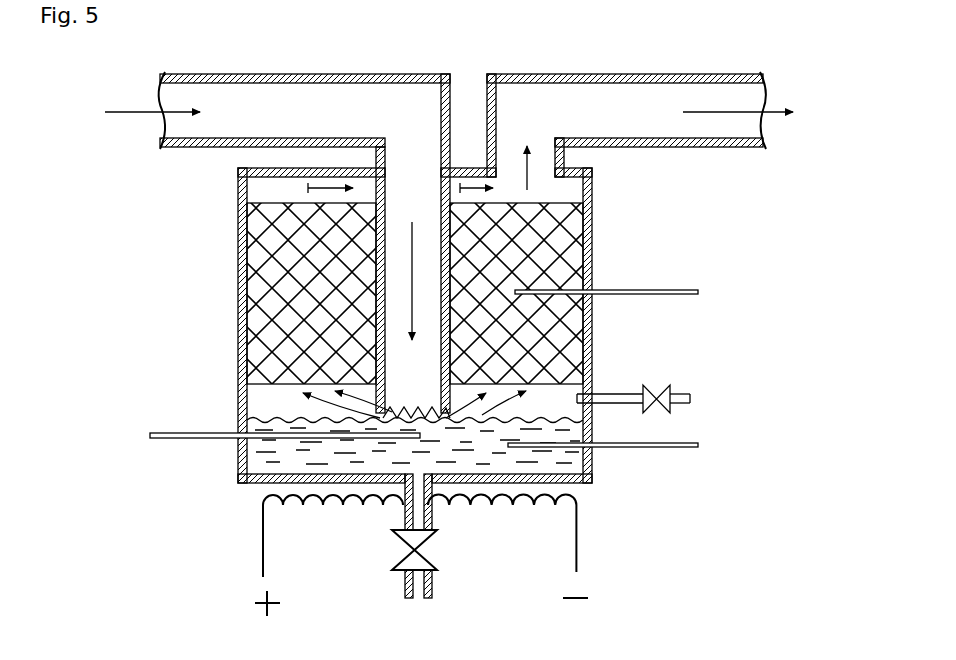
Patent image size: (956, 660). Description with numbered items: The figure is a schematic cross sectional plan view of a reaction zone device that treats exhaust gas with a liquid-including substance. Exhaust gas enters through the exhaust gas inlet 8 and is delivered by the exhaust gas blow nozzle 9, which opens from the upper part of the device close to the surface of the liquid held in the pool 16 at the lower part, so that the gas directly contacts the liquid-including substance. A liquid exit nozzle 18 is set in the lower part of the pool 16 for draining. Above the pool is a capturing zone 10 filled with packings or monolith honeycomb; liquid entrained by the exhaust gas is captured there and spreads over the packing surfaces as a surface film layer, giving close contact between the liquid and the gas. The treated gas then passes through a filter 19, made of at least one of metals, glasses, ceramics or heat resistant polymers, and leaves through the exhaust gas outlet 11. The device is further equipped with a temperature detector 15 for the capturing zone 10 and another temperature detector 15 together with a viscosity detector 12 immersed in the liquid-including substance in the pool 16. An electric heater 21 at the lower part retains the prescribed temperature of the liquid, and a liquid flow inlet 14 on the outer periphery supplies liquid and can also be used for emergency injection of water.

The exhaust gas inlet 8 is at (172, 126).
The exhaust gas blow nozzle 9 is at (433, 410).
The capturing zone 10 is at (288, 269).
The exhaust gas outlet 11 is at (750, 130).
The viscosity detector 12 is at (213, 433).
The liquid flow inlet 14 is at (600, 391).
The temperature detector 15 is at (700, 294).
The pool 16 is at (236, 459).
The liquid exit nozzle 18 is at (433, 578).
The filter 19 is at (272, 204).
The electric heater 21 is at (263, 557).